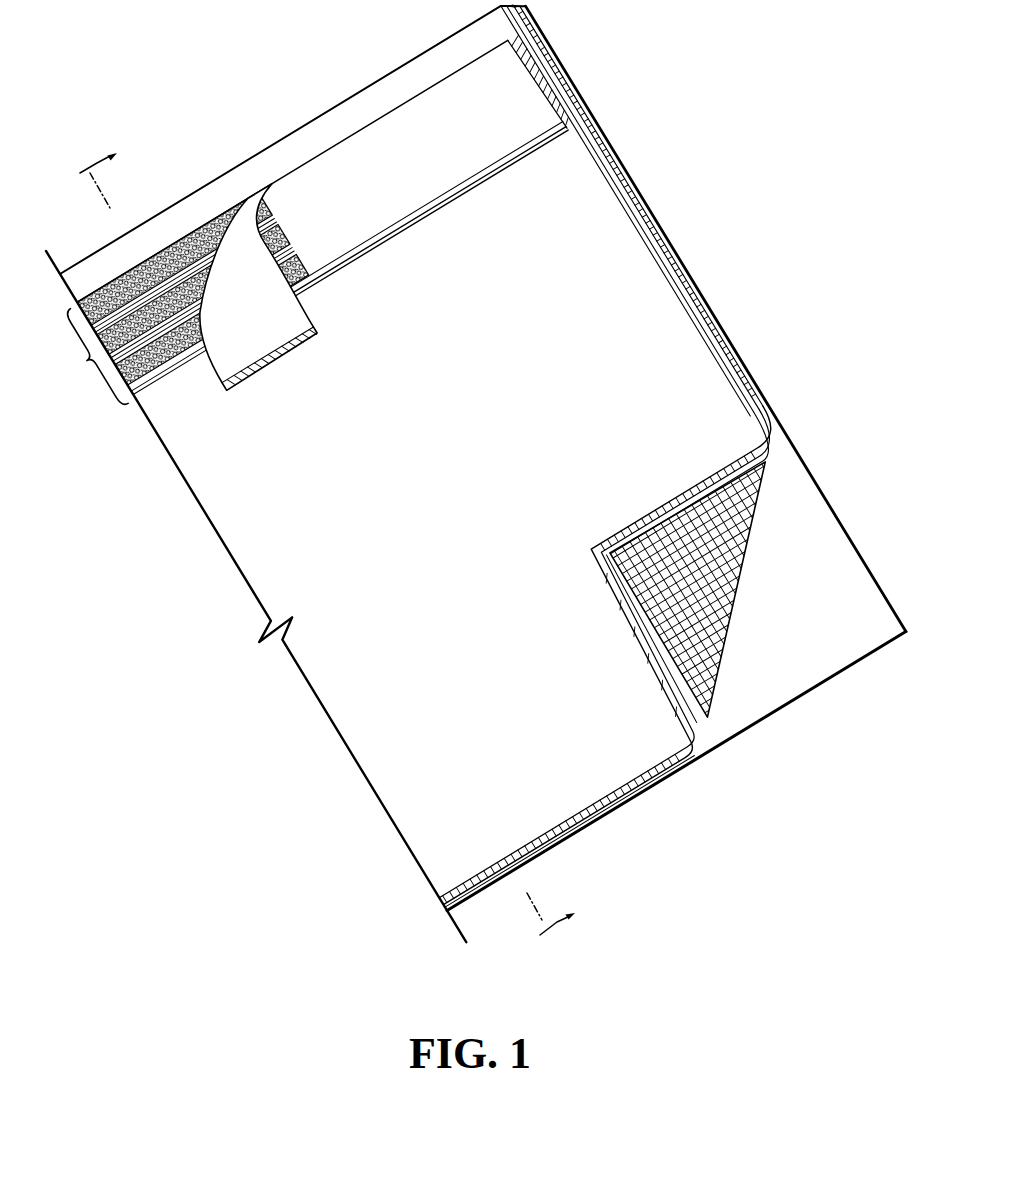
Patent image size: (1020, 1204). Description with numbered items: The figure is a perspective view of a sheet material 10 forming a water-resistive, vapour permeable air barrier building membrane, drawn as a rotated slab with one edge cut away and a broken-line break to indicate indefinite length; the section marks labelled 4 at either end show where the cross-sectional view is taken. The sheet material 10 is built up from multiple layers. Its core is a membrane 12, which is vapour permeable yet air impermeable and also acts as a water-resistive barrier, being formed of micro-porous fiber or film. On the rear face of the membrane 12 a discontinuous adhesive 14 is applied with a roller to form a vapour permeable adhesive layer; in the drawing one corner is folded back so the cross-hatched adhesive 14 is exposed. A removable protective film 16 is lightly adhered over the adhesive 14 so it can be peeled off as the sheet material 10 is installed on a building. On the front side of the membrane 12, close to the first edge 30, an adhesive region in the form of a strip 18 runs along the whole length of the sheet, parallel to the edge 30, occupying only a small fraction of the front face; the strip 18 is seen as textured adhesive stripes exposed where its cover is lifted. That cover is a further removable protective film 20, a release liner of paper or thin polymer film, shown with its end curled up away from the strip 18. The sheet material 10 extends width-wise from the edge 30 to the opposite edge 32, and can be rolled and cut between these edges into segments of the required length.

The sheet material 10 is at (236, 84).
The membrane 12 is at (647, 515).
The discontinuous adhesive 14 is at (705, 582).
The removable protective film 16 is at (855, 540).
The strip 18 is at (185, 301).
The removable protective film 20 is at (300, 315).
The first edge 30 is at (338, 104).
The edge 32 is at (828, 683).
The section line 4- 4 is at (338, 535).